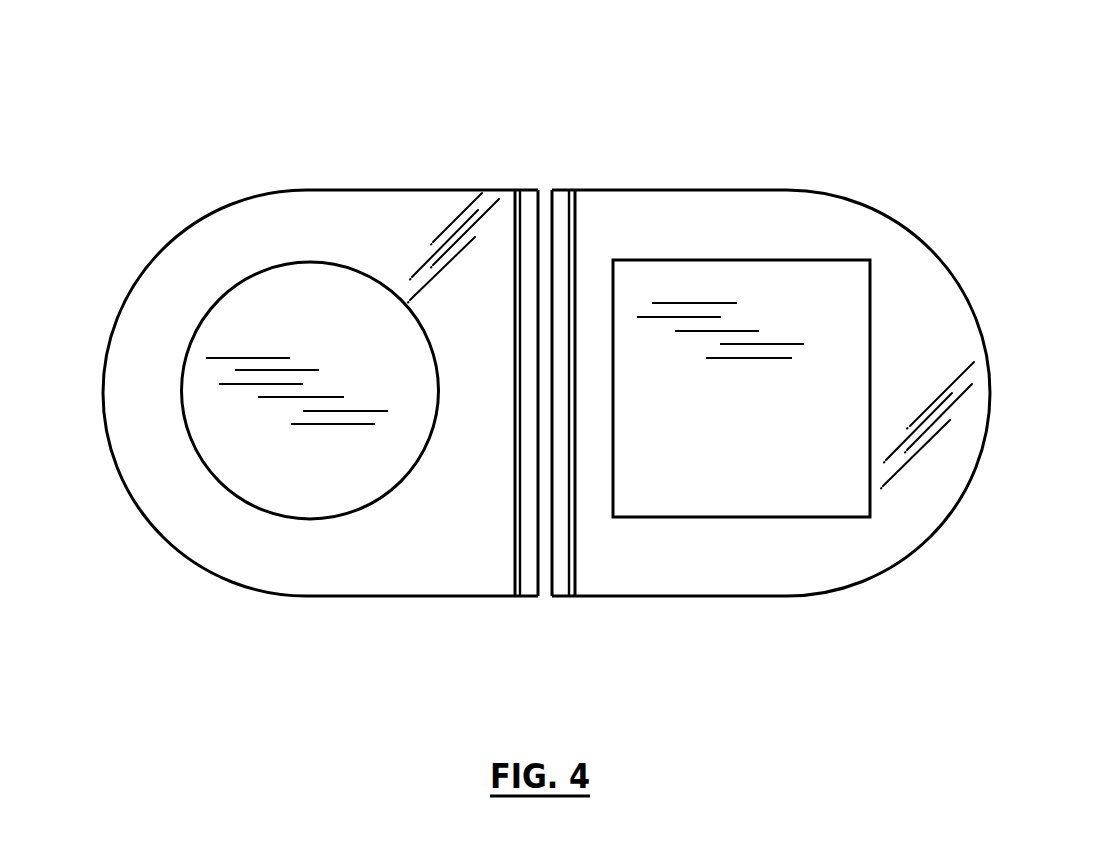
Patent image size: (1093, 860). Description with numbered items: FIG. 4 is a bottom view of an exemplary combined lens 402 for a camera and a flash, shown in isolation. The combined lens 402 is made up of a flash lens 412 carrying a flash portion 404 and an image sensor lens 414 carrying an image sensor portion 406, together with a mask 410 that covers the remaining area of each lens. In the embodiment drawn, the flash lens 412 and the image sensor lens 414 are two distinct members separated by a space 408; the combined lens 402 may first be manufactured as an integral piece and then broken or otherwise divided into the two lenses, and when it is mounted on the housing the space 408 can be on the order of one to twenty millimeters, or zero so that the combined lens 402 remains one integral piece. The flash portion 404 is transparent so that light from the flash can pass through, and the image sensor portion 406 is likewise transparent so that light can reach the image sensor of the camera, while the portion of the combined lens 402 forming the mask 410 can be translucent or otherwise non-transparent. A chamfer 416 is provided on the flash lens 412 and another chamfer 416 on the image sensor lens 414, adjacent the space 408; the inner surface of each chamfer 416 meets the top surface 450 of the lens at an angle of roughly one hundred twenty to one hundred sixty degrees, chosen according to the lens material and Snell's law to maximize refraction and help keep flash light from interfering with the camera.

The combined lens 402 is at (643, 135).
The flash portion 404 is at (306, 285).
The image sensor portion 406 is at (758, 302).
The space 408 is at (544, 580).
The mask 410 is at (449, 571).
The flash lens 412 is at (179, 277).
The image sensor lens 414 is at (922, 323).
The chamfer 416 is at (560, 190).
The top surface 450 is at (766, 421).